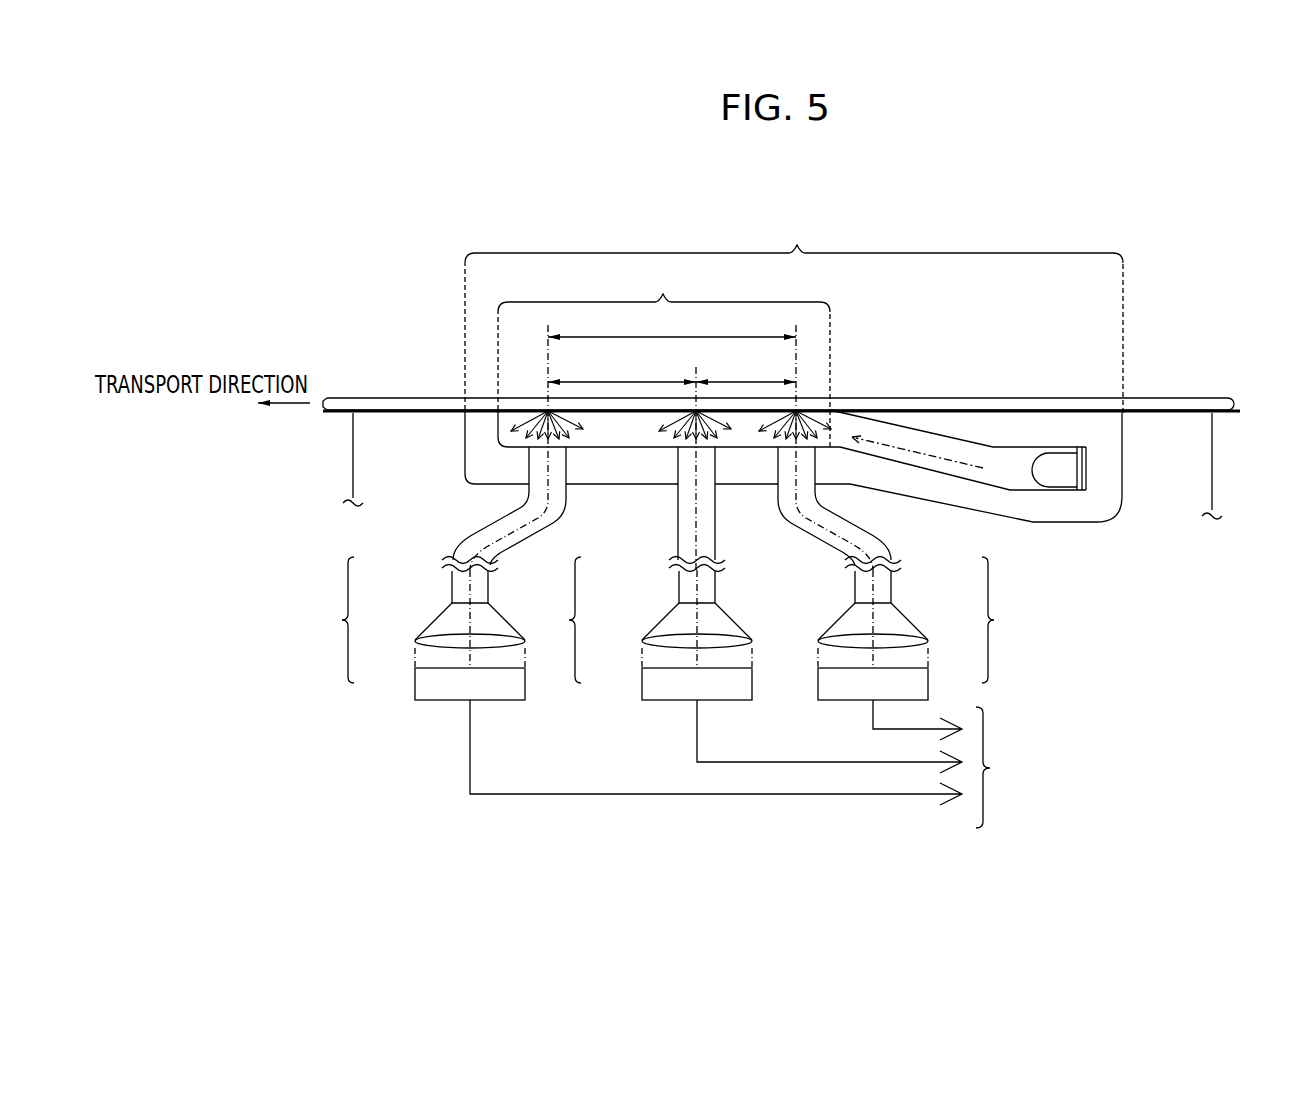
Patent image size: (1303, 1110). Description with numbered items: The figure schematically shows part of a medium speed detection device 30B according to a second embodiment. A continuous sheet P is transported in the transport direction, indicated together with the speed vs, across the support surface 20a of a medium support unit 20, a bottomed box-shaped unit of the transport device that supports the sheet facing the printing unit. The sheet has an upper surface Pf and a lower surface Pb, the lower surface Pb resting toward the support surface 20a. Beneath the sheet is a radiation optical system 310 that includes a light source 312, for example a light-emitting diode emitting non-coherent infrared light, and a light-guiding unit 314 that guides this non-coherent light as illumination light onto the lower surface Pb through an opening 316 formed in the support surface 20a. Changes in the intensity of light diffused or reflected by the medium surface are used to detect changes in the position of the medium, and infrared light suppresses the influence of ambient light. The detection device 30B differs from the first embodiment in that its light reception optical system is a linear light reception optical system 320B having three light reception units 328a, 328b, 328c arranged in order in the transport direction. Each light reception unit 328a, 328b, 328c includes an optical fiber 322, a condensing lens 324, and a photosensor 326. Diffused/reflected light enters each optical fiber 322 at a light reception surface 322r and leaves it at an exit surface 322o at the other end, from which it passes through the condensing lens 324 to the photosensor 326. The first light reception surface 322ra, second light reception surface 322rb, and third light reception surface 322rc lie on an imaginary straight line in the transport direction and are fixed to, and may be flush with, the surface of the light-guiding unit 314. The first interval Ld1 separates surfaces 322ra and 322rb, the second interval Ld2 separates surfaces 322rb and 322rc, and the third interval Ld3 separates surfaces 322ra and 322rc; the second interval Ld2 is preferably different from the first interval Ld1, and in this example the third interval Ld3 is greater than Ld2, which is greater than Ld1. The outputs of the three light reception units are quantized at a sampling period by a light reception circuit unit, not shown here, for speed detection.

The medium support unit 20 is at (1215, 505).
The support surface 20a is at (417, 397).
The medium speed detection device 30B is at (1228, 265).
The radiation optical system 310 is at (794, 368).
The light source 312 is at (1063, 456).
The light-guiding unit 314 is at (946, 437).
The opening 316 is at (669, 356).
The linear light reception optical system 320B is at (1100, 647).
The optical fiber 322 is at (452, 587).
The exit surface 322o is at (484, 606).
The light reception surface 322r is at (681, 495).
The first light reception surface 322ra is at (806, 446).
The second light reception surface 322rb is at (690, 446).
The third light reception surface 322rc is at (528, 446).
The condensing lens 324 is at (428, 638).
The photosensor 326 is at (415, 690).
The first light reception unit 328a is at (962, 648).
The second light reception unit 328b is at (738, 665).
The third light reception unit 328c is at (622, 681).
The continuous sheet P is at (811, 405).
The medium front surface Pf is at (1273, 382).
The lower surface Pb is at (1222, 411).
The first interval Ld1 is at (746, 369).
The second interval Ld2 is at (622, 369).
The third interval Ld3 is at (672, 325).
The transport speed vs is at (286, 417).